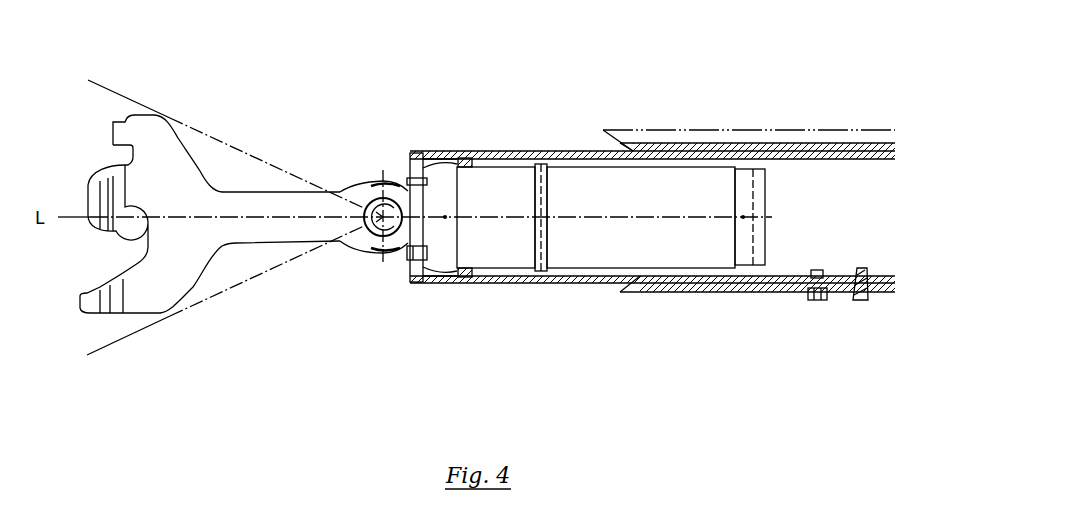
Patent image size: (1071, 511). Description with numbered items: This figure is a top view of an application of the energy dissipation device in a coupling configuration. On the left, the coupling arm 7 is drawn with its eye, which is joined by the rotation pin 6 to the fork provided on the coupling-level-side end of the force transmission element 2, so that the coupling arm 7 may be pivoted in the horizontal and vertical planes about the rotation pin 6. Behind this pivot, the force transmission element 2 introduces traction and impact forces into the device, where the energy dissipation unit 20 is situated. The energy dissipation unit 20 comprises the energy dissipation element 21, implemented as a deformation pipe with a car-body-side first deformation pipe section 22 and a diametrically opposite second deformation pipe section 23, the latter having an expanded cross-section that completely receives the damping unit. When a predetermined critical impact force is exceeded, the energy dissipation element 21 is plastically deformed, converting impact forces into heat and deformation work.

The force transmission element 2 is at (418, 211).
The rotation pin 6 is at (385, 228).
The coupling arm 7 is at (205, 197).
The energy dissipation unit 20 is at (752, 98).
The energy dissipation element 21 is at (611, 280).
The first deformation pipe section 22 is at (642, 235).
The second deformation pipe section 23 is at (510, 243).